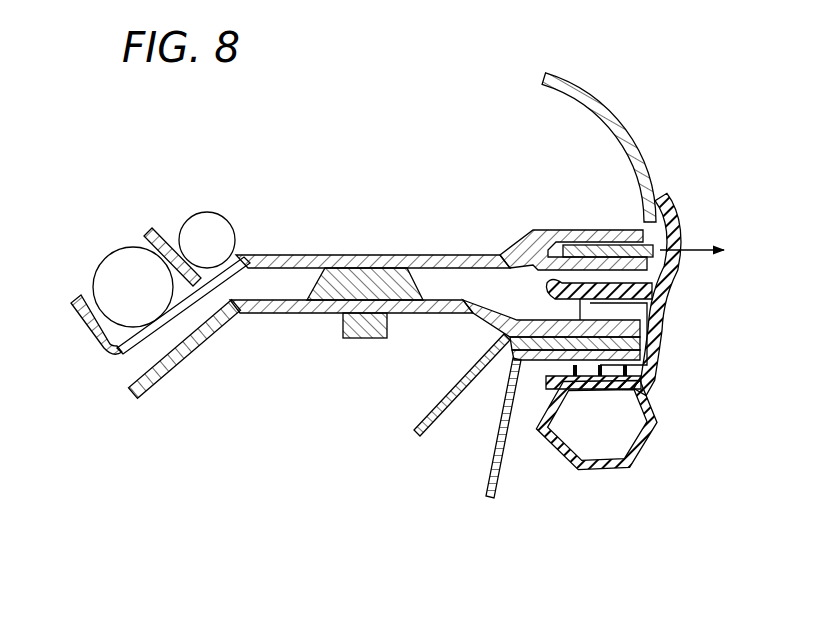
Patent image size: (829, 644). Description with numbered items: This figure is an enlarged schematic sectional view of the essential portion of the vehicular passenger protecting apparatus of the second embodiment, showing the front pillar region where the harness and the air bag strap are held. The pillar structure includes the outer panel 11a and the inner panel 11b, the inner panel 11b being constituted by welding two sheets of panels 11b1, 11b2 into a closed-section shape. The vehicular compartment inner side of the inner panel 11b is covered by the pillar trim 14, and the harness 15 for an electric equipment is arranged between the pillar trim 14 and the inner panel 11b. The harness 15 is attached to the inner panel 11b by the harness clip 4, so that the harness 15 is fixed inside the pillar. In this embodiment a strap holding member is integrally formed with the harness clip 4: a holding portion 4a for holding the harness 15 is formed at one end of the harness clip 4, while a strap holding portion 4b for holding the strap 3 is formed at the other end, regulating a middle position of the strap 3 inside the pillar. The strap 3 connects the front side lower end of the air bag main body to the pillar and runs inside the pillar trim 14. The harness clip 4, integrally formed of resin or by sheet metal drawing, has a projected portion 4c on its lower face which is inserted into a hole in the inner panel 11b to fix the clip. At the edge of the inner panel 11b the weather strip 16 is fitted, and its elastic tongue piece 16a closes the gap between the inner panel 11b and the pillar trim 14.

The strap 3 is at (592, 243).
The harness clip 4 is at (313, 255).
The holding portion 4a is at (96, 349).
The strap holding portion 4b is at (526, 224).
The projected portion 4c is at (360, 335).
The outer panel 11a is at (498, 479).
The inner panel 11b is at (320, 443).
The panel 11b1 is at (167, 377).
The panel 11b2 is at (457, 431).
The pillar trim 14 is at (600, 100).
The harness 15 is at (197, 227).
The weather strip 16 is at (657, 408).
The tongue piece 16a is at (682, 213).